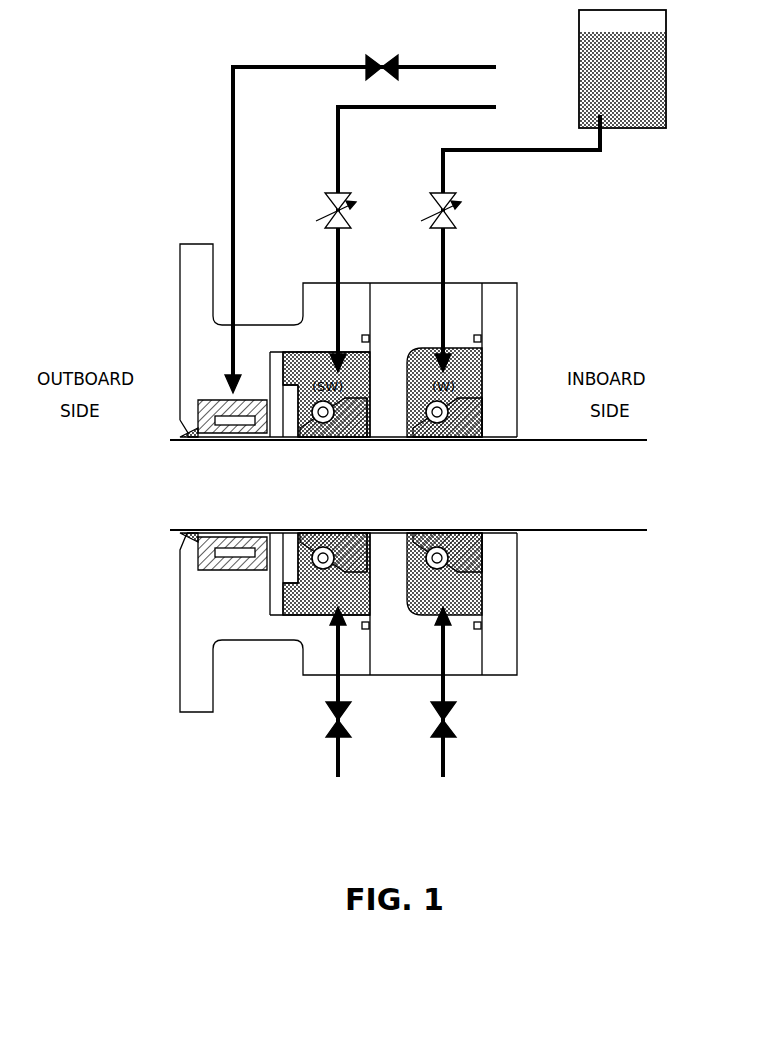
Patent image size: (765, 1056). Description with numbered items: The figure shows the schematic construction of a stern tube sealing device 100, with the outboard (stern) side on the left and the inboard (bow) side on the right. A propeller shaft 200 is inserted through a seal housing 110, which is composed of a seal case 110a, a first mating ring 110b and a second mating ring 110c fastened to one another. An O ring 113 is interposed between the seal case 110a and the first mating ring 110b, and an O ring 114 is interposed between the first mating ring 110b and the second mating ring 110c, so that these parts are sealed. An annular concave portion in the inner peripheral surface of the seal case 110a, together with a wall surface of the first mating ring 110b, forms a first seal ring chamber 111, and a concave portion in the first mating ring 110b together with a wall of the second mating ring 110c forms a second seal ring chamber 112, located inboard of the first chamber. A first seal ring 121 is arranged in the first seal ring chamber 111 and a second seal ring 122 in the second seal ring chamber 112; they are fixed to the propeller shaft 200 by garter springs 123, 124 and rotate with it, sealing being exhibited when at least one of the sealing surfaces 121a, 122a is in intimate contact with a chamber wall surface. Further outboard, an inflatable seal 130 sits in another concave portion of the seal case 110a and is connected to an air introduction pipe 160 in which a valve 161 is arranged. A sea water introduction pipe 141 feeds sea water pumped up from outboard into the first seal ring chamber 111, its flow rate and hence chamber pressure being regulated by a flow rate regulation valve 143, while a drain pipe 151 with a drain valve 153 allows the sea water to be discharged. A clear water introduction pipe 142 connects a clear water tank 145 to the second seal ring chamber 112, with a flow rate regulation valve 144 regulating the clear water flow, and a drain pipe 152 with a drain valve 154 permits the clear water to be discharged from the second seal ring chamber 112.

The stern tube sealing device 100 is at (150, 137).
The seal housing 110 is at (351, 495).
The seal case 110a is at (193, 637).
The first mating ring 110b is at (390, 660).
The second mating ring 110c is at (507, 620).
The first seal ring chamber 111 is at (297, 362).
The second seal ring chamber 112 is at (455, 360).
The O ring 113 is at (369, 338).
The O ring 114 is at (481, 338).
The first seal ring 121 is at (320, 530).
The sealing surface 121a is at (365, 440).
The second seal ring 122 is at (438, 530).
The sealing surface 122a is at (482, 440).
The garter spring 123 is at (302, 578).
The garter spring 124 is at (445, 562).
The inflatable seal 130 is at (220, 530).
The sea water introduction pipe 141 is at (336, 155).
The clear water introduction pipe 142 is at (441, 155).
The flow rate regulation valve 143 is at (327, 210).
The flow rate regulation valve 144 is at (432, 210).
The clear water tank 145 is at (579, 40).
The drain pipe 151 is at (340, 770).
The drain pipe 152 is at (445, 770).
The drain valve 153 is at (326, 730).
The drain valve 154 is at (456, 730).
The air introduction pipe 160 is at (250, 62).
The valve 161 is at (393, 58).
The propeller shaft 200 is at (177, 505).